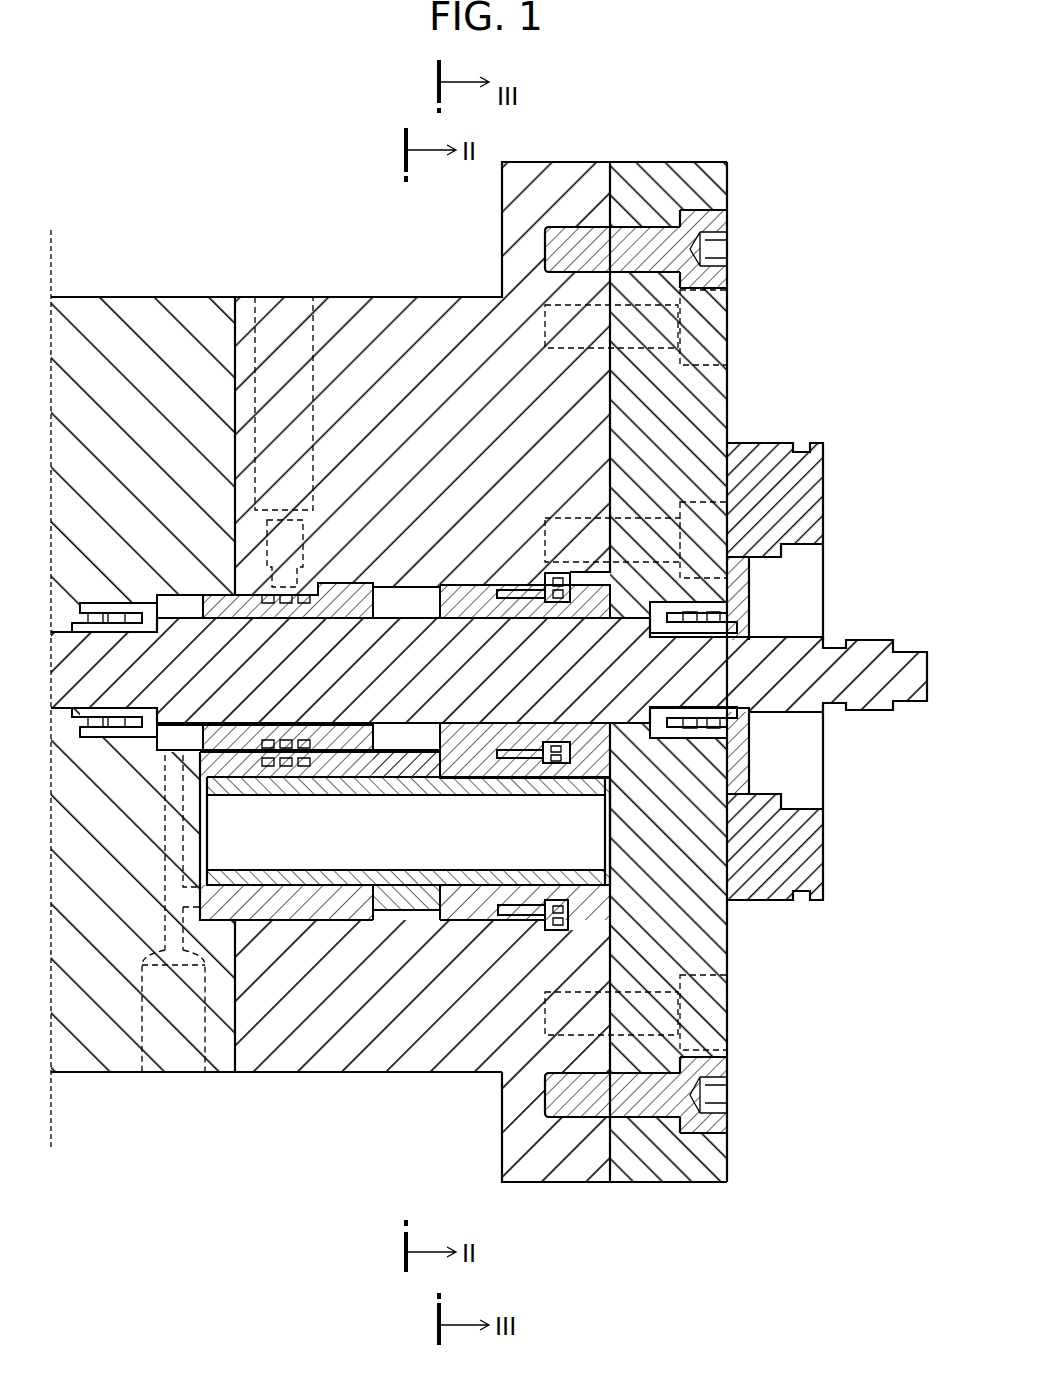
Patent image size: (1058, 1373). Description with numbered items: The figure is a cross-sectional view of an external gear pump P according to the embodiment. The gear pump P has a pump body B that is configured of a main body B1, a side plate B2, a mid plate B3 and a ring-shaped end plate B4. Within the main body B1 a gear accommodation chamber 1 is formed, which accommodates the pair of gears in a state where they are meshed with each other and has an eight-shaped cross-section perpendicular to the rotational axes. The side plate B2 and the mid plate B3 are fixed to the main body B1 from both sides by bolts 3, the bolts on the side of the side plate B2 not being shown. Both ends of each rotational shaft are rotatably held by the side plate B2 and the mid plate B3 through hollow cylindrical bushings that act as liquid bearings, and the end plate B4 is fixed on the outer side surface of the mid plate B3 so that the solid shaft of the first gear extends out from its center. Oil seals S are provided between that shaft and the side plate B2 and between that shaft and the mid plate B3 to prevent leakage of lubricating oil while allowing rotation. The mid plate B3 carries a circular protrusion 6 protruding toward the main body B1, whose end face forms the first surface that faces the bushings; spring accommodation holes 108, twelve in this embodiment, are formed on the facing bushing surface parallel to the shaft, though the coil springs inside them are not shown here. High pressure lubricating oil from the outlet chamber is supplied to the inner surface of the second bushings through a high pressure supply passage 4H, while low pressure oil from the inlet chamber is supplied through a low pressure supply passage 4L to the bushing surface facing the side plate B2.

The gear pump P is at (343, 181).
The pump body B is at (83, 1183).
The main body B1 is at (352, 1045).
The side plate B2 is at (100, 1050).
The mid plate B3 is at (702, 1157).
The end plate B4 is at (793, 869).
The gear accommodation chamber 1 is at (363, 583).
The bolts 3 is at (720, 262).
The circular protrusion 6 is at (730, 528).
The high pressure supply passage 4H is at (283, 330).
The low pressure supply passage 4L is at (178, 1045).
The spring accommodation holes 108 is at (527, 573).
The oil seals S is at (117, 740).